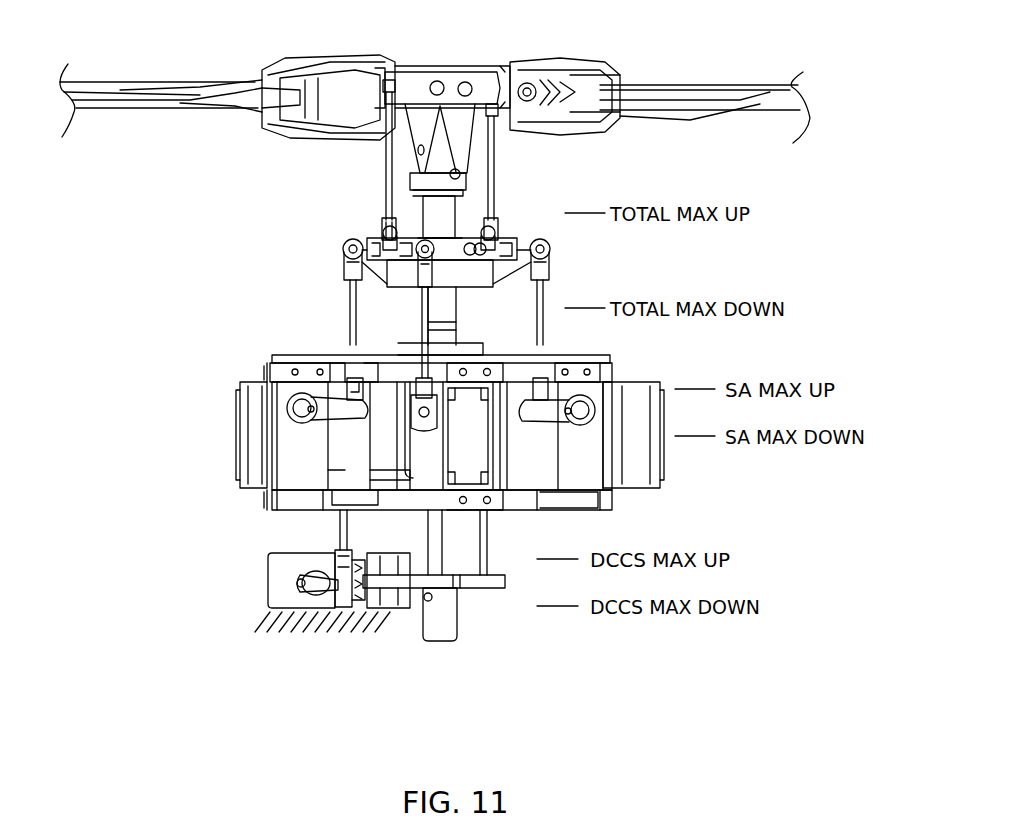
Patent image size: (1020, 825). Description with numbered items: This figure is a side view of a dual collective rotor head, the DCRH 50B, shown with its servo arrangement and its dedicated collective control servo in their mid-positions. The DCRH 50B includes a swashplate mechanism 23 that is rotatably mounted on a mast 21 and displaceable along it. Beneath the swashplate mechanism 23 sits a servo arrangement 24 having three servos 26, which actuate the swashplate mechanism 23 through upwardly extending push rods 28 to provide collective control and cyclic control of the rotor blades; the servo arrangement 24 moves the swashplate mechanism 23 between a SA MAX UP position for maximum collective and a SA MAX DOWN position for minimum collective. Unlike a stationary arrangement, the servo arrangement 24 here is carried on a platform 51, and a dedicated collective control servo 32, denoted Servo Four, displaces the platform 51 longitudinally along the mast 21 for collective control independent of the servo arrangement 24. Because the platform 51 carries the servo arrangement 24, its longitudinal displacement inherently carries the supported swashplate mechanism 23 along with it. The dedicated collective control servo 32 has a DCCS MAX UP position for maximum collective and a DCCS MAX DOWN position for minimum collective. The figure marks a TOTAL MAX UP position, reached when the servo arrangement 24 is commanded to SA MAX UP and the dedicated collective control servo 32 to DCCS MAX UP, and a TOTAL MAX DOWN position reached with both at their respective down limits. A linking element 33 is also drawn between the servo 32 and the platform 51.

The DCRH 50B is at (222, 36).
The push rods 28 is at (385, 152).
The mast 21 is at (445, 305).
The swashplate mechanism 23 is at (285, 265).
The servo arrangement 24 is at (170, 437).
The servos 26 is at (255, 450).
The platform 51 is at (560, 500).
The control rod 33 is at (338, 525).
The dedicated collective control servo 32 is at (278, 580).